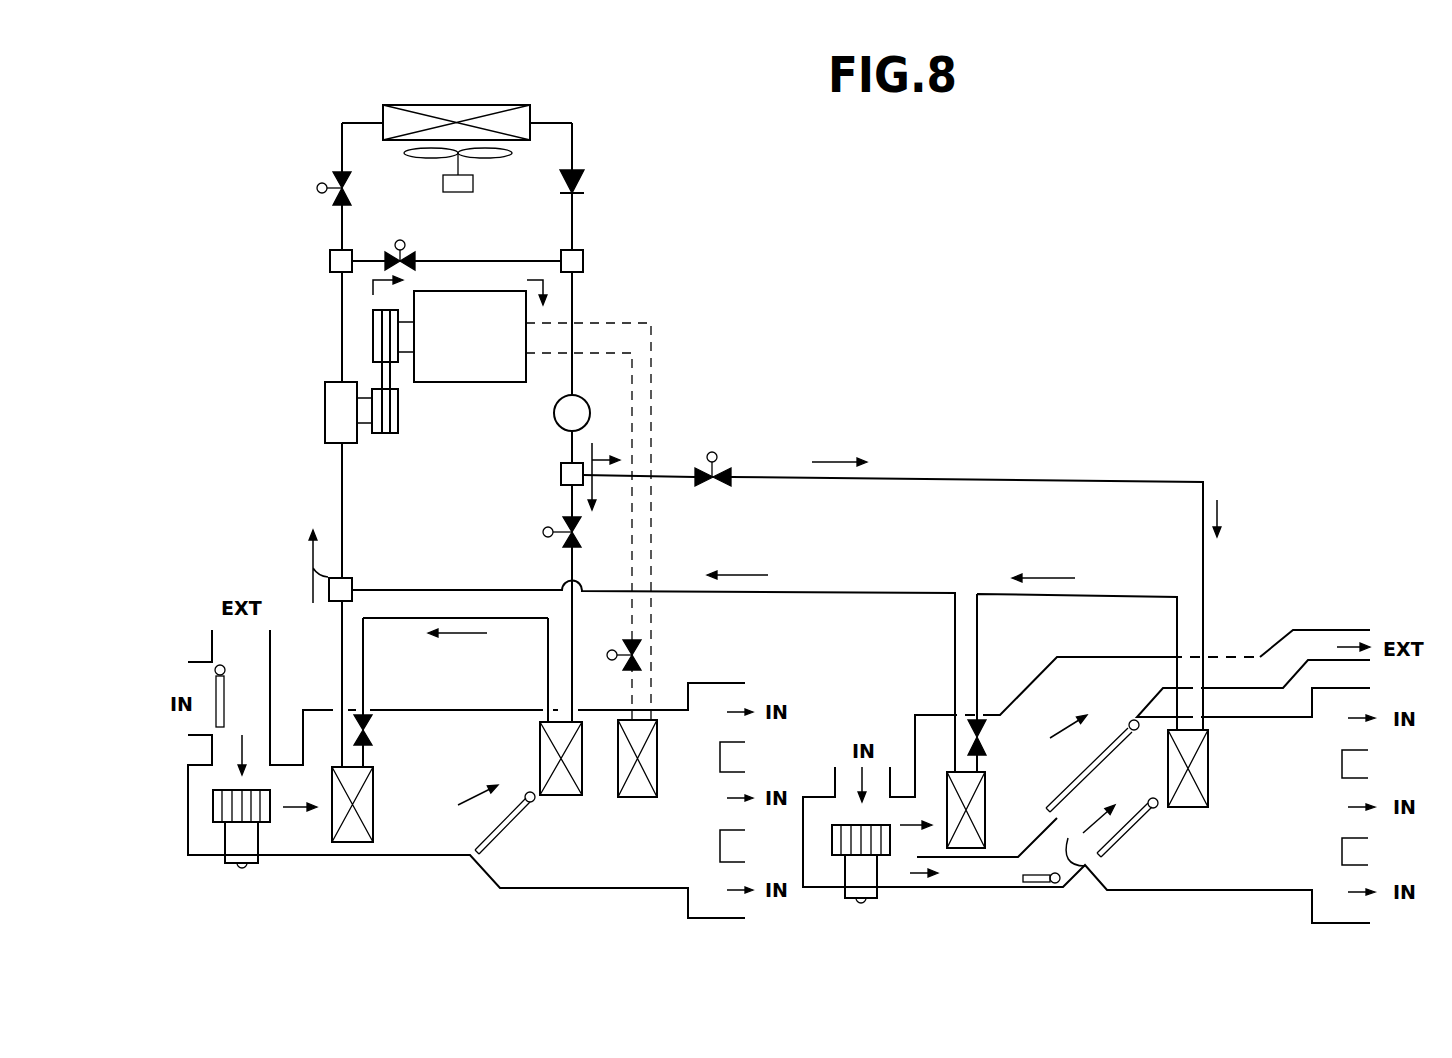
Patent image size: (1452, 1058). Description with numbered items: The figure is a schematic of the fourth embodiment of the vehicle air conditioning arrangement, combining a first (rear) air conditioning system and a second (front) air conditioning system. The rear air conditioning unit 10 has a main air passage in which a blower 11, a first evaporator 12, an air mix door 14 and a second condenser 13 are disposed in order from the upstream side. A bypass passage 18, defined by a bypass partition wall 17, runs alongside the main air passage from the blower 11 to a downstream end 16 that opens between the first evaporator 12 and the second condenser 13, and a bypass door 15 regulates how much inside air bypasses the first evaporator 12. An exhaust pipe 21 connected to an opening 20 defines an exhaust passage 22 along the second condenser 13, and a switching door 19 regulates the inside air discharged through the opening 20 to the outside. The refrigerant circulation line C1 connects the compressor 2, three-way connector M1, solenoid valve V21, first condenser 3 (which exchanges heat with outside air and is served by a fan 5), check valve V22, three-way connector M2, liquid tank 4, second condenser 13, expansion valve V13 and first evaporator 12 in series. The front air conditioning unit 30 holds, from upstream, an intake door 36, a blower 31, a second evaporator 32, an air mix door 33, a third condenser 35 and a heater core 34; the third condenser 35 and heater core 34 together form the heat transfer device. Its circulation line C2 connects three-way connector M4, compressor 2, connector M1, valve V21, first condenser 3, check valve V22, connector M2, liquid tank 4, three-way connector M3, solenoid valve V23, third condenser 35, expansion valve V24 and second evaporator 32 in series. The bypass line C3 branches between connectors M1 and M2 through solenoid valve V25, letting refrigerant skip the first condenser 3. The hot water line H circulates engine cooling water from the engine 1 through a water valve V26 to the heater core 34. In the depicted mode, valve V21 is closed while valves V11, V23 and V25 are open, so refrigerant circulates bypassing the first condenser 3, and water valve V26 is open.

The engine 1 is at (465, 382).
The compressor 2 is at (325, 394).
The first condenser 3 is at (507, 107).
The liquid tank 4 is at (555, 421).
The fan 5 is at (421, 161).
The rear air conditioning unit 10 is at (1265, 892).
The blower 11 is at (835, 858).
The first evaporator 12 is at (955, 770).
The second condenser 13 is at (1190, 810).
The air mix door 14 is at (1137, 825).
The bypass door 15 is at (1037, 883).
The downstream end 16 is at (1085, 868).
The bypass partition wall 17 is at (963, 860).
The bypass passage 18 is at (990, 870).
The switching door 19 is at (1100, 743).
The opening 20 is at (1065, 708).
The exhaust pipe 21 is at (1327, 628).
The exhaust passage 22 is at (1232, 668).
The front air conditioning unit 30 is at (407, 856).
The blower 31 is at (218, 823).
The second evaporator 32 is at (342, 843).
The air mix door 33 is at (507, 823).
The heater core 34 is at (638, 798).
The third condenser 35 is at (565, 797).
The intake door 36 is at (226, 700).
The refrigerant circulation line C1 is at (968, 479).
The refrigerant circulation line C2 is at (342, 478).
The refrigerant bypass line C3 is at (513, 261).
The hot water line H is at (653, 387).
The three-way connector M1 is at (333, 277).
The three-way connector M2 is at (583, 277).
The three-way connector M3 is at (561, 473).
The three-way connector M4 is at (352, 579).
The solenoid valve V11 is at (715, 452).
The expansion valve V13 is at (983, 738).
The solenoid valve V21 is at (330, 182).
The check valve V22 is at (585, 188).
The solenoid valve V23 is at (546, 534).
The expansion valve V24 is at (378, 712).
The solenoid valve V25 is at (408, 246).
The water valve V26 is at (637, 641).